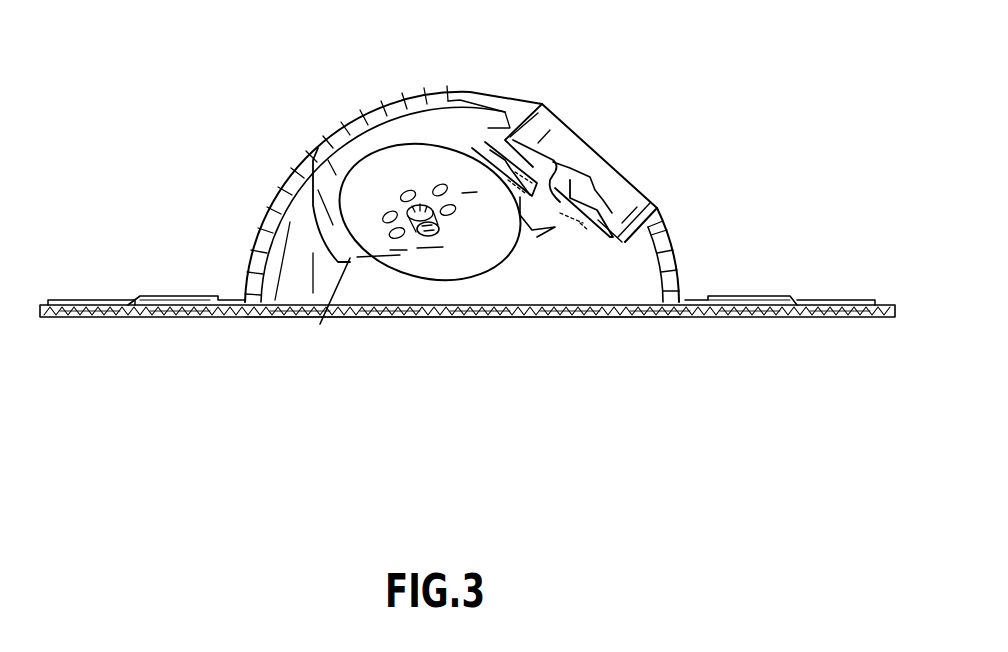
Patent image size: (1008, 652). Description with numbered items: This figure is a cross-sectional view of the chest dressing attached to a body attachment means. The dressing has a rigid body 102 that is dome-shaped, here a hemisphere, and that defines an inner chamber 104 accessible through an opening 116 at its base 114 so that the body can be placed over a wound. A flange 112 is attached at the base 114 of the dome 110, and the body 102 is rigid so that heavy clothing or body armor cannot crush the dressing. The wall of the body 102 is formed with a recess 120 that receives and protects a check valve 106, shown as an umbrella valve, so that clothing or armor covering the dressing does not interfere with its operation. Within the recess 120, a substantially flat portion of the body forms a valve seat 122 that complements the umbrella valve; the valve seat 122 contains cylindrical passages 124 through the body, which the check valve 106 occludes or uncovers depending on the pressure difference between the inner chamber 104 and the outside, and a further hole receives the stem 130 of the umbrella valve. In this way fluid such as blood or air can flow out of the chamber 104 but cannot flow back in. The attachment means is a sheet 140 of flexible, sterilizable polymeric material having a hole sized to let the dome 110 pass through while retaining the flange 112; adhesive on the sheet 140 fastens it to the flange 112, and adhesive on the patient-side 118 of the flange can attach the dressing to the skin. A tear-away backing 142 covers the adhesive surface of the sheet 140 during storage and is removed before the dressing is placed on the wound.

The rigid body 102 is at (353, 115).
The inner chamber 104 is at (547, 266).
The check valve 106 is at (580, 182).
The dome 110 is at (510, 88).
The flange 112 is at (191, 297).
The base 114 is at (255, 314).
The opening 116 is at (463, 306).
The patient-side 118 is at (718, 312).
The recess 120 is at (430, 125).
The valve seat 122 is at (372, 268).
The passage 124 is at (316, 301).
The stem 130 is at (426, 235).
The sheet 140 is at (92, 299).
The tear-away backing 142 is at (780, 305).